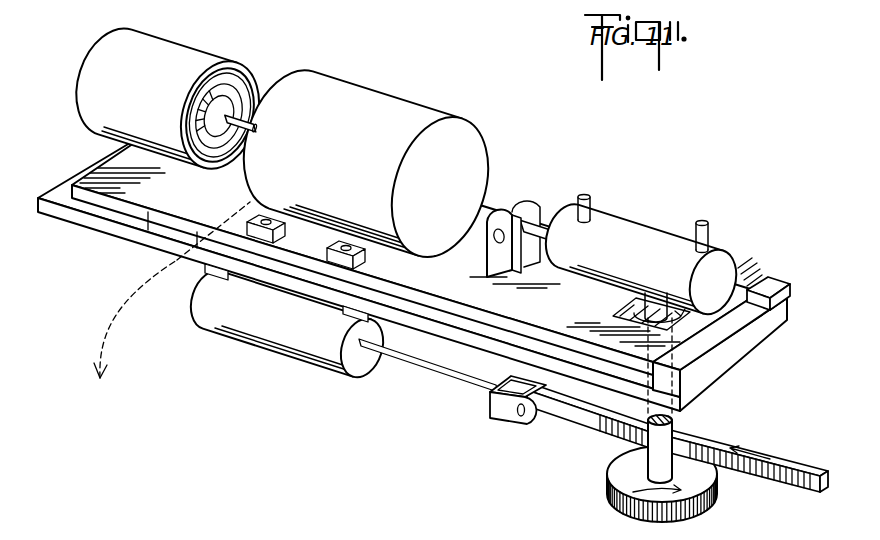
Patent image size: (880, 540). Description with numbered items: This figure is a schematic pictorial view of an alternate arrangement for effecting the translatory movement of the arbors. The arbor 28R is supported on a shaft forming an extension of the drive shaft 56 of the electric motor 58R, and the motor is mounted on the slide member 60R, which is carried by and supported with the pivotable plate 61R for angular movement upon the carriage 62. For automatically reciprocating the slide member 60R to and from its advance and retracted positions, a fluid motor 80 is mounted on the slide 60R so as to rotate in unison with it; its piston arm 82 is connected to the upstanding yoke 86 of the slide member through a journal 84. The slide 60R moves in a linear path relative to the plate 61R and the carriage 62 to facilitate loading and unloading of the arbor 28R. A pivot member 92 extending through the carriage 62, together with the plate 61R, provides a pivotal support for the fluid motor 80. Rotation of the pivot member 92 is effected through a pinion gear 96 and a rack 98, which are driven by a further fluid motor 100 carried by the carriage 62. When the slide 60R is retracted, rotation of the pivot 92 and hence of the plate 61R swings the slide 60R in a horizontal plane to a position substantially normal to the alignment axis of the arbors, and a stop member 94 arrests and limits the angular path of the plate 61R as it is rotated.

The arbor 28R is at (192, 58).
The electric motor 58R is at (365, 100).
The drive shaft 56 is at (257, 122).
The journal 84 is at (519, 208).
The piston arm 82 is at (543, 222).
The fluid motor 80 is at (637, 233).
The stop member 94 is at (772, 283).
The upstanding yoke 86 is at (493, 258).
The carriage 62 is at (82, 228).
The slide member 60R is at (147, 233).
The pivotable plate 61R is at (197, 250).
The fluid motor 100 is at (262, 337).
The pivot member 92 is at (673, 425).
The rack 98 is at (773, 465).
The pinion gear 96 is at (694, 512).